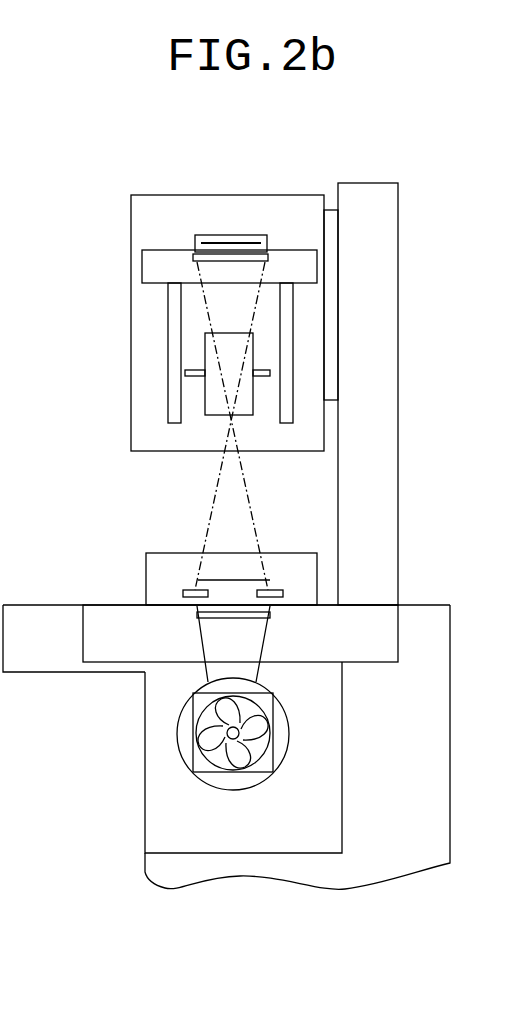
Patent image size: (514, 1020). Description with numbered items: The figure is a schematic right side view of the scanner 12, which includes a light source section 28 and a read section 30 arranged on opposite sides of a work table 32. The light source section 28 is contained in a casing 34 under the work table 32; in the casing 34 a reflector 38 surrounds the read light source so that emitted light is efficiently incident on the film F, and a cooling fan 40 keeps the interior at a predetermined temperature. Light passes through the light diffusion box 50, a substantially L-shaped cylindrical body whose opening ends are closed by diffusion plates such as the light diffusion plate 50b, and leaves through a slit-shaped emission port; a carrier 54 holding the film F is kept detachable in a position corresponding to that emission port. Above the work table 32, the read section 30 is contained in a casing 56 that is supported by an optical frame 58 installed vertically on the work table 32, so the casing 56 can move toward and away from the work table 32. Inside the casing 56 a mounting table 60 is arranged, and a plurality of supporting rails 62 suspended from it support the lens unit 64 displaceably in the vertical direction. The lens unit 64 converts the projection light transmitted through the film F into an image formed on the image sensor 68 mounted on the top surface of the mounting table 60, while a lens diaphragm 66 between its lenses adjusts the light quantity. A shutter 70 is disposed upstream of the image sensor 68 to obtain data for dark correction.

The scanner 12 is at (438, 165).
The light source section 28 is at (158, 832).
The read section 30 is at (227, 370).
The work table 32 is at (52, 605).
The casing 34 is at (343, 862).
The reflector 38 is at (283, 705).
The cooling fan 40 is at (270, 762).
The light diffusion box 50 is at (227, 644).
The light diffusion plate 50b is at (220, 620).
The carrier 54 is at (150, 553).
The casing 56 is at (131, 307).
The optical frame 58 is at (385, 287).
The mounting table 60 is at (142, 275).
The supporting rails 62 is at (168, 345).
The lens unit 64 is at (255, 417).
The lens diaphragm 66 is at (185, 373).
The image sensor 68 is at (233, 235).
The shutter 70 is at (268, 258).
The film F is at (198, 580).